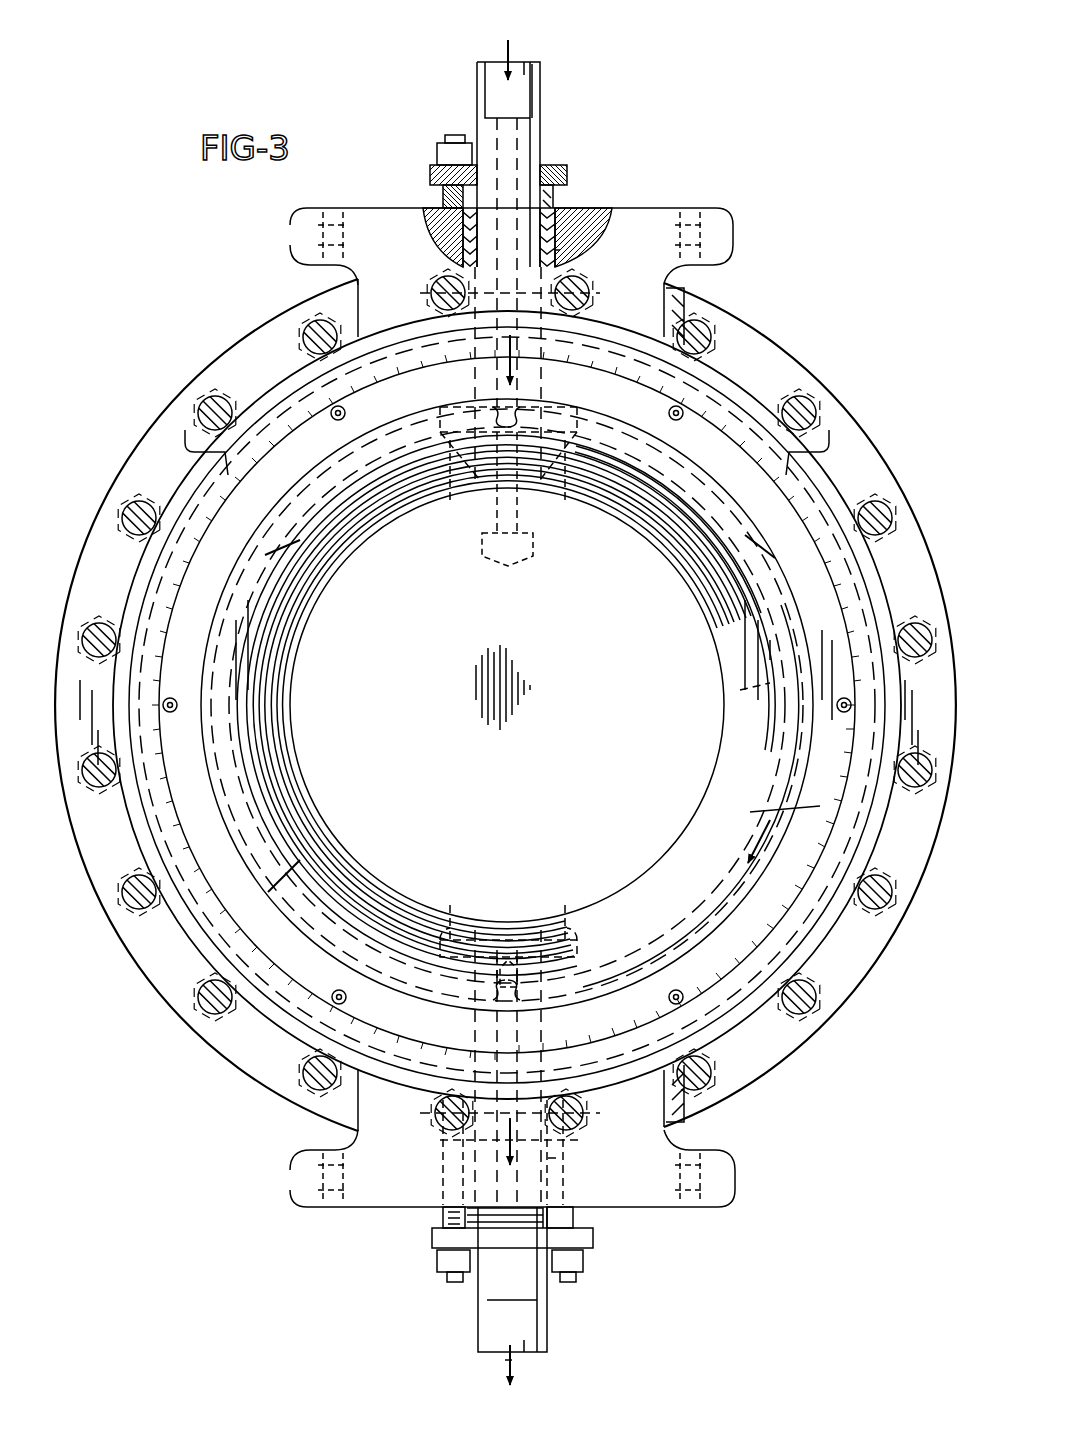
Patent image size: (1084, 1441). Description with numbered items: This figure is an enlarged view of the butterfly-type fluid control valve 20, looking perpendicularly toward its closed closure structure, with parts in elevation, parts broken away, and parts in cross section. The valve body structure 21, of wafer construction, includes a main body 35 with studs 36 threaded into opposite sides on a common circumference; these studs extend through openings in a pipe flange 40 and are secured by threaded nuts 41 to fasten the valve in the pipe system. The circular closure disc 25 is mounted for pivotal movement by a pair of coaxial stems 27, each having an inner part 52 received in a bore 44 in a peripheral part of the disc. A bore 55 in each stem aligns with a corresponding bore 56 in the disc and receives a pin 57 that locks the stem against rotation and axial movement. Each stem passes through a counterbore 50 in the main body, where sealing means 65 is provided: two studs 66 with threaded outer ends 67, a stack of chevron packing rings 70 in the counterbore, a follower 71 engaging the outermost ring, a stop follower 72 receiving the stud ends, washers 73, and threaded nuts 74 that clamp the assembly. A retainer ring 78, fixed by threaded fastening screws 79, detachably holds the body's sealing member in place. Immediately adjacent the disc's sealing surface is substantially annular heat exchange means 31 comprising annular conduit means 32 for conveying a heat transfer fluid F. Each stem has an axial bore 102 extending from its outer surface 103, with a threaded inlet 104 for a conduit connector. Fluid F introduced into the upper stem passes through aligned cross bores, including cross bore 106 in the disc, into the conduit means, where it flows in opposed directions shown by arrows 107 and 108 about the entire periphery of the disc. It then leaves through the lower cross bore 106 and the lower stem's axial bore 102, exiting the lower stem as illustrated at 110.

The fluid control valve 20 is at (246, 314).
The valve body structure 21 is at (733, 369).
The closure disc 25 is at (560, 744).
The stems 27 is at (478, 68).
The annular heat exchange means 31 is at (760, 628).
The annular conduit means 32 is at (740, 690).
The main body 35 is at (286, 238).
The studs 36 is at (215, 1010).
The flange 40 is at (160, 436).
The threaded nuts 41 is at (178, 1020).
The bore 44 is at (478, 553).
The counterbore 50 is at (558, 250).
The inner part of stem 52 is at (530, 540).
The stem bore 55 is at (506, 708).
The disc bore 56 is at (508, 690).
The pin 57 is at (445, 447).
The sealing means 65 is at (585, 228).
The studs 66 is at (448, 196).
The threaded outer ends 67 is at (455, 135).
The chevron packing rings 70 is at (466, 242).
The follower ring 71 is at (553, 200).
The stop follower 72 is at (556, 165).
The washers 73 is at (432, 166).
The threaded nuts 74 is at (446, 144).
The retainer ring 78 is at (818, 803).
The threaded fastening screws 79 is at (852, 706).
The axial bore 102 is at (428, 295).
The outer surface 103 is at (530, 62).
The threaded inlet 104 is at (543, 70).
The cross bore 106 is at (540, 405).
The arrow 107 is at (285, 528).
The arrow 108 is at (738, 550).
The fluid exit 110 is at (505, 1362).
The heat transfer fluid F is at (506, 58).